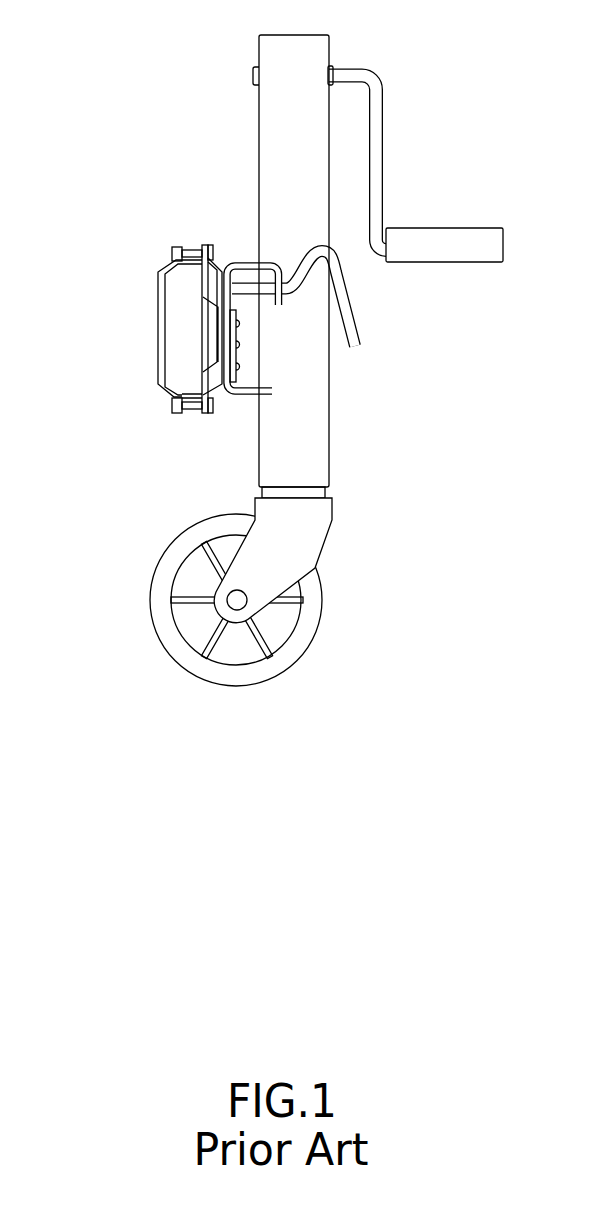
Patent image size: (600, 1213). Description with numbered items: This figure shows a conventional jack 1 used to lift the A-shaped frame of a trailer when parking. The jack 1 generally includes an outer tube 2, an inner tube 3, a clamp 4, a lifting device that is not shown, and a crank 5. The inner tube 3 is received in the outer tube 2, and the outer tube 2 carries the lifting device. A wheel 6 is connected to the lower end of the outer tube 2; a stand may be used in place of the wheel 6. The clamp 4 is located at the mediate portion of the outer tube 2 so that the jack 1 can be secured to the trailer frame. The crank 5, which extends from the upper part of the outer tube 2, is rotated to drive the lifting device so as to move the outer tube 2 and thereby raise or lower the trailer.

The conventional jack 1 is at (114, 108).
The outer tube 2 is at (313, 414).
The inner tube 3 is at (320, 493).
The clamp 4 is at (195, 253).
The crank 5 is at (373, 105).
The wheel 6 is at (317, 622).